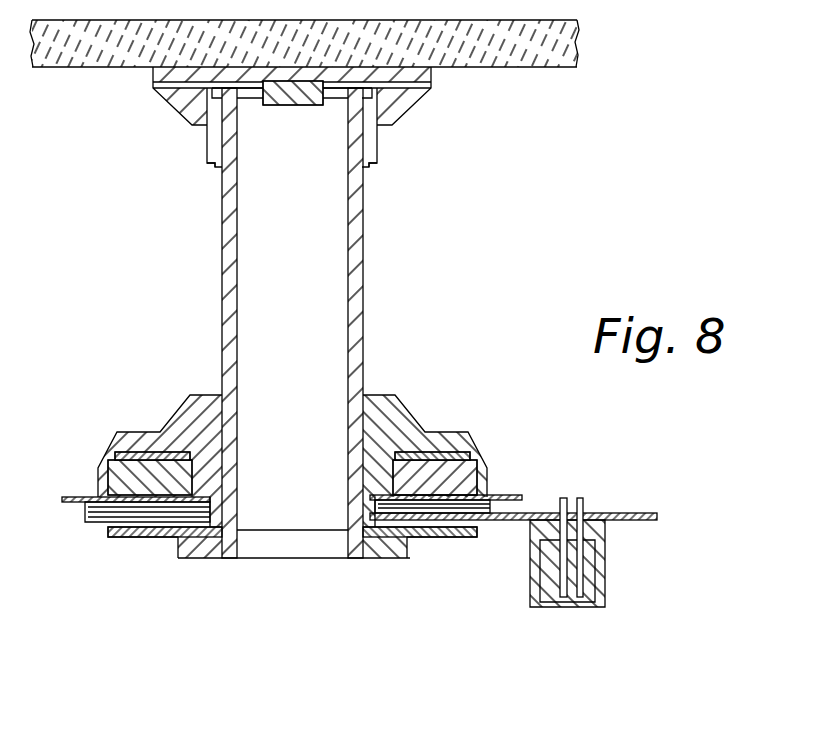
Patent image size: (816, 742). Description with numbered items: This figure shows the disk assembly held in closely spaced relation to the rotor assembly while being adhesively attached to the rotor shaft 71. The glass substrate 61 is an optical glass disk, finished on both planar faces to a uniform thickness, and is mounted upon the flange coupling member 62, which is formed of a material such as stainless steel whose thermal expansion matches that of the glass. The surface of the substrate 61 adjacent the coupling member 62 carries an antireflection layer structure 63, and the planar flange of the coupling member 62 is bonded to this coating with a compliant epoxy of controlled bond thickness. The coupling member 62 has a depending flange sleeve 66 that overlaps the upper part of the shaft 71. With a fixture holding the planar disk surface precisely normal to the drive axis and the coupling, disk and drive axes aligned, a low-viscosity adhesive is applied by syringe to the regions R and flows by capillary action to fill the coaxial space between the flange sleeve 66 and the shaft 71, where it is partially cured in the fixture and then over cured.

The glass substrate 61 is at (608, 44).
The flange coupling member 62 is at (110, 124).
The antireflection layer structure 63 is at (396, 122).
The flange sleeve 66 is at (380, 148).
The rotor shaft 71 is at (222, 323).
The regions R is at (214, 176).